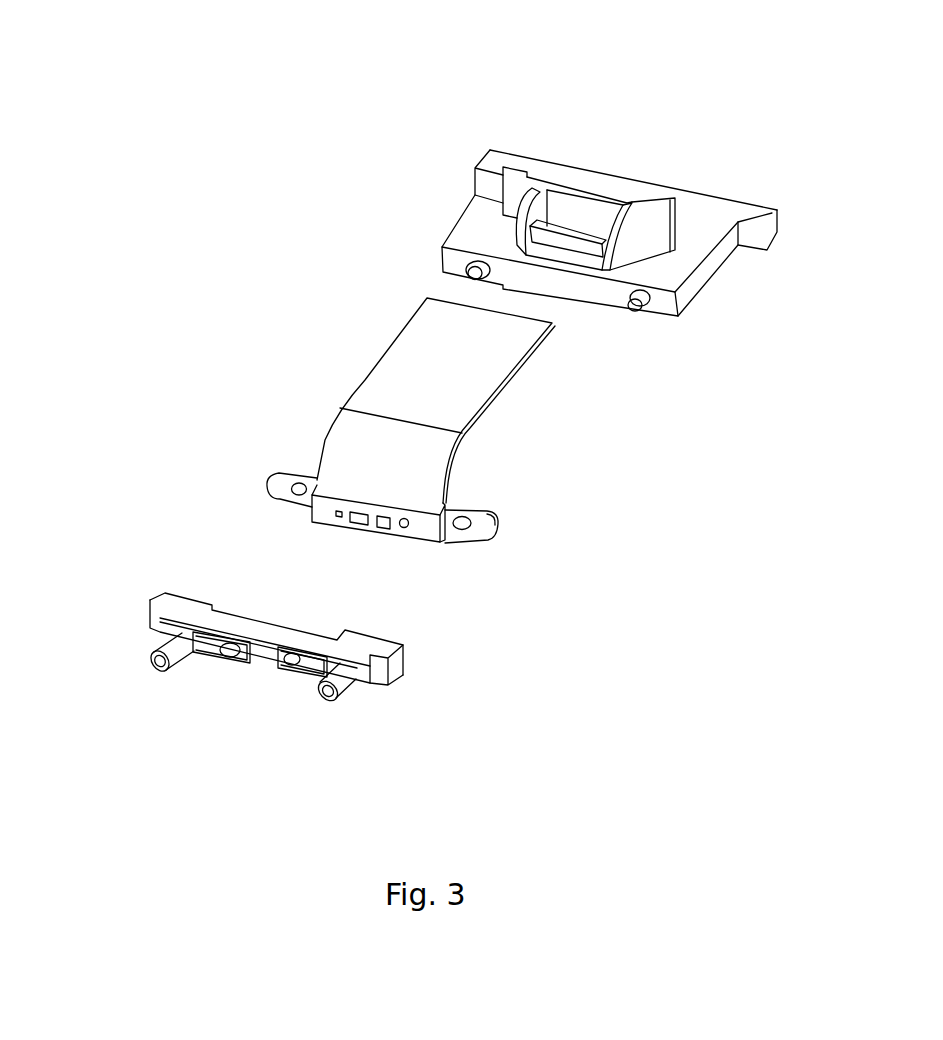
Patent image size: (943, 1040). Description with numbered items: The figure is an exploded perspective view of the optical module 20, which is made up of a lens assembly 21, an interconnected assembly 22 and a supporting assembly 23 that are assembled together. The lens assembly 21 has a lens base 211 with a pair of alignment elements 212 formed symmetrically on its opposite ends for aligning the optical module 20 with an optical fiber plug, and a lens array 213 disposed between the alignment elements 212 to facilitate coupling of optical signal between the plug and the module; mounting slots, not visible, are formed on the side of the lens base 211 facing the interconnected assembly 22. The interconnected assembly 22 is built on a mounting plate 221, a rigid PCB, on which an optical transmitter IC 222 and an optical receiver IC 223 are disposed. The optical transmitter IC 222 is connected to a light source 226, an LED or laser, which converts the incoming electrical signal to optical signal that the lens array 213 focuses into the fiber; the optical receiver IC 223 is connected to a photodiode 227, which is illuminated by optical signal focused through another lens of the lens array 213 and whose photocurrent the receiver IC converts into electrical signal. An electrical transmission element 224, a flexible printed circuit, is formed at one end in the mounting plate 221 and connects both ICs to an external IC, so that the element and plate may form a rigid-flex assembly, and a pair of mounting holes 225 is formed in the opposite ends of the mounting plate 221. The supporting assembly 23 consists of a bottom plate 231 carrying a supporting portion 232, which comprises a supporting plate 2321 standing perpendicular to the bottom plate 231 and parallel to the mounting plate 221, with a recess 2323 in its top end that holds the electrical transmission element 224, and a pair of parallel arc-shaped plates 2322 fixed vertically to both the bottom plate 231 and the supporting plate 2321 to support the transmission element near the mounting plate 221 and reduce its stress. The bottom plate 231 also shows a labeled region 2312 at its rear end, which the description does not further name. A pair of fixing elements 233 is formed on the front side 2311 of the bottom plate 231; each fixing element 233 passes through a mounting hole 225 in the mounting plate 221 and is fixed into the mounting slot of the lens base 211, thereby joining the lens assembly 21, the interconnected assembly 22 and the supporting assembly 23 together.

The optical module 20 is at (127, 39).
The lens assembly 21 is at (120, 587).
The lens base 211 is at (400, 663).
The alignment elements 212 is at (340, 680).
The lens array 213 is at (293, 665).
The interconnected assembly 22 is at (310, 368).
The mounting plate 221 is at (492, 528).
The optical transmitter integrated circuit 222 is at (355, 520).
The optical receiver IC 223 is at (384, 524).
The electrical transmission element 224 is at (461, 418).
The mounting holes 225 is at (462, 526).
The light source 226 is at (338, 514).
The photodiode 227 is at (405, 528).
The supporting assembly 23 is at (443, 171).
The bottom plate 231 is at (683, 268).
The front side 2311 is at (676, 307).
The positioning tab 2312 is at (733, 248).
The supporting portion 232 is at (791, 92).
The supporting plate 2321 is at (660, 222).
The arc-shaped plates 2322 is at (623, 232).
The recess 2323 is at (567, 185).
The fixing elements 233 is at (638, 307).